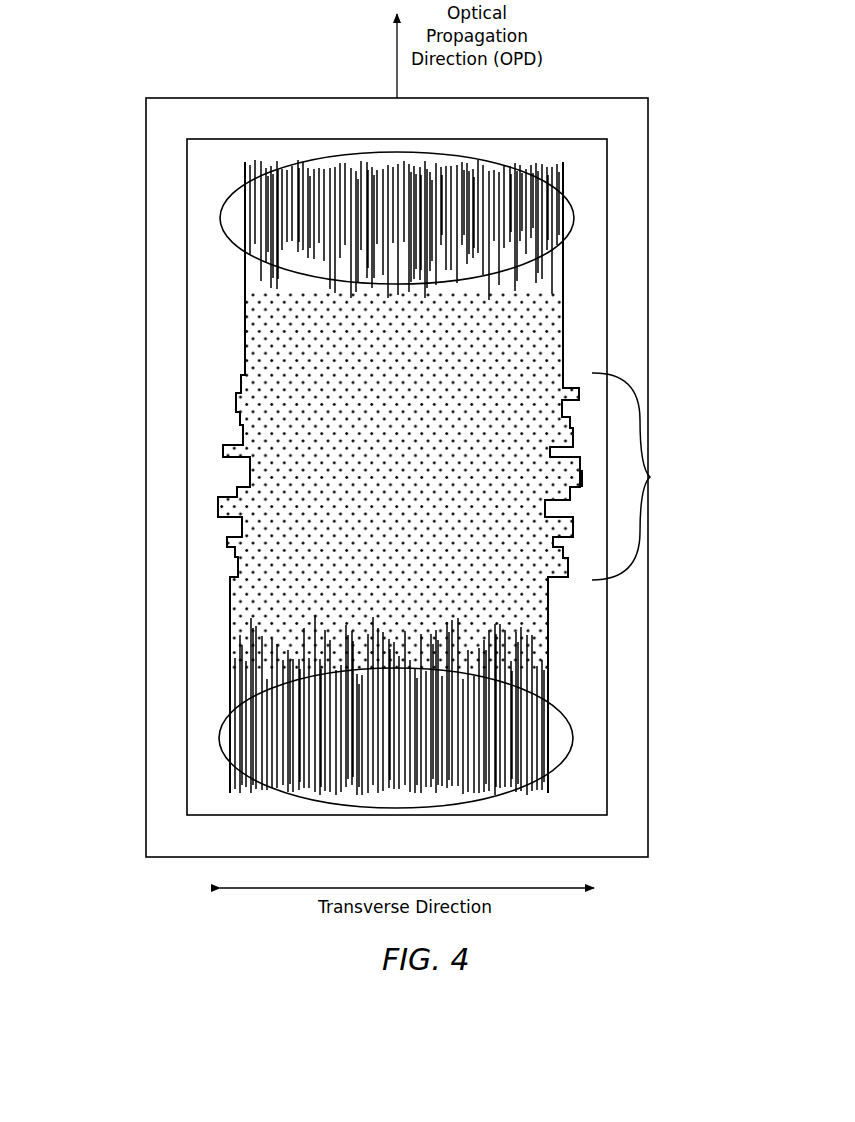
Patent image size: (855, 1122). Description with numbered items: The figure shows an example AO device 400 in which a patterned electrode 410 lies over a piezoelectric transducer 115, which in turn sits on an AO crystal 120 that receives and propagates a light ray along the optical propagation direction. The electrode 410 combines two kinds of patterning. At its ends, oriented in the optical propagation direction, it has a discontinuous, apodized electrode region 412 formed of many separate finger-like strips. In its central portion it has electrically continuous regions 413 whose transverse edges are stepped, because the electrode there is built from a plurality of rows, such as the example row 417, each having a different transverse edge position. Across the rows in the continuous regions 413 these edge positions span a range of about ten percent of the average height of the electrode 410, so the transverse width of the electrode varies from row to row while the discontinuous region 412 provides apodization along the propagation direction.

The AO device 400 is at (104, 46).
The AO crystal 120 is at (601, 113).
The transducer 115 is at (588, 307).
The patterned electrode 410 is at (553, 614).
The discontinuous electrode region 412 is at (572, 240).
The electrically continuous regions 413 is at (642, 476).
The row 417 is at (570, 488).